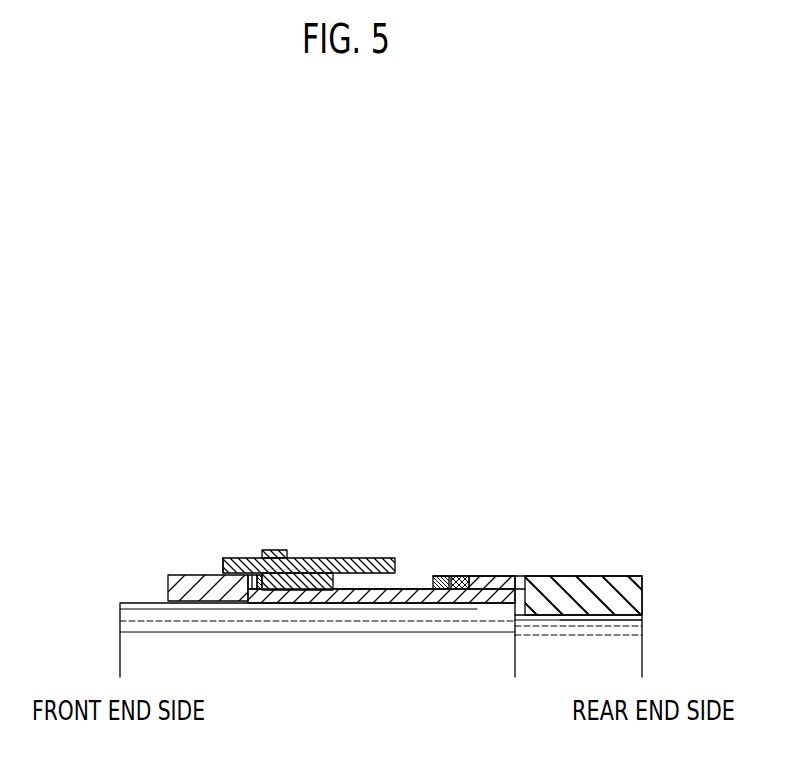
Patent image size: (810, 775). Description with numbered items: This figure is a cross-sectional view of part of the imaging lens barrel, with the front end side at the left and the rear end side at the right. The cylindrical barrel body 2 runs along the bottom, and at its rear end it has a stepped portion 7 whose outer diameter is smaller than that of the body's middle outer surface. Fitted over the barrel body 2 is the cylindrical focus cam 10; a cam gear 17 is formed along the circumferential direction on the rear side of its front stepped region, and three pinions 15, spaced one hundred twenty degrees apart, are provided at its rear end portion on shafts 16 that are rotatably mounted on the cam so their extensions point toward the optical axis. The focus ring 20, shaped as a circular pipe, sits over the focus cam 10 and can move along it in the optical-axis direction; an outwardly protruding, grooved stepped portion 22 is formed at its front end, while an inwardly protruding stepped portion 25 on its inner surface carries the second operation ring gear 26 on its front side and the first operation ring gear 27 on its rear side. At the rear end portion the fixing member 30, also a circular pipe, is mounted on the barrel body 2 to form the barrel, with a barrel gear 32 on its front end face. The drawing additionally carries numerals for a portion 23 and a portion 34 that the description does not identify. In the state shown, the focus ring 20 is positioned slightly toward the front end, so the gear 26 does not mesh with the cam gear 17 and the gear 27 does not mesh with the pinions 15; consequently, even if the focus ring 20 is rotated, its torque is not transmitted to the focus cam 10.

The barrel body 2 is at (155, 653).
The stepped portion 7 is at (558, 617).
The focus cam 10 is at (190, 586).
The pinions 15 is at (465, 578).
The shafts 16 is at (444, 578).
The cam gear 17 is at (258, 590).
The focus ring 20 is at (352, 557).
The stepped portion 22 is at (272, 552).
The plate end portion 23 is at (220, 570).
The stepped portion 25 is at (300, 592).
The second operation ring gear 26 is at (263, 590).
The first operation ring gear 27 is at (335, 585).
The fixing member 30 is at (598, 582).
The barrel gear 32 is at (478, 578).
The terminal lower layer 34 is at (595, 617).